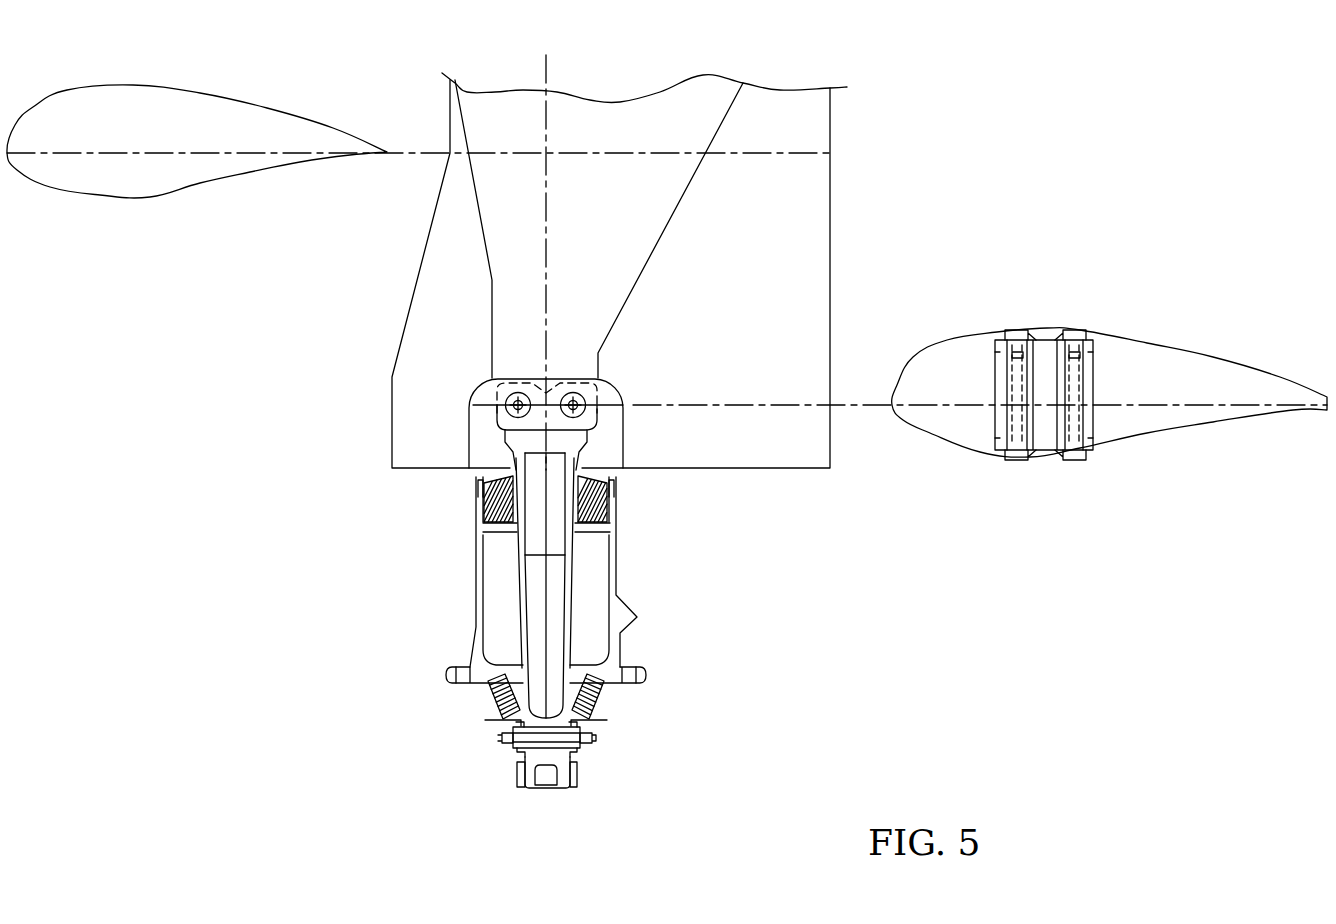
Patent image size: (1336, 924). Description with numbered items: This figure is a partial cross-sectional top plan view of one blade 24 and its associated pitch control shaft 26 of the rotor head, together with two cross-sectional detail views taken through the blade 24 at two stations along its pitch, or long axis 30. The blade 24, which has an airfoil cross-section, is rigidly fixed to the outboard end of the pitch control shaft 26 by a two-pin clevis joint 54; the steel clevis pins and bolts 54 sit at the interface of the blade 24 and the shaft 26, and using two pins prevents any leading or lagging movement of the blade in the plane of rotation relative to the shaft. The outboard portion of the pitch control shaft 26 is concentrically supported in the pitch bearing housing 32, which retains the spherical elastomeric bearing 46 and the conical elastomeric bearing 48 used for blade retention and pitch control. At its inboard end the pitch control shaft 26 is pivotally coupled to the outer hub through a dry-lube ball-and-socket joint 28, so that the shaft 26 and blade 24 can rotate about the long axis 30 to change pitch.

The blade 24 is at (187, 192).
The pitch control shaft 26 is at (568, 565).
The dry-lube ball-and-socket joint 28 is at (557, 780).
The long axis 30 is at (547, 68).
The pitch bearing housing 32 is at (480, 607).
The spherical elastomeric bearing 46 is at (597, 702).
The conical elastomeric bearing 48 is at (605, 513).
The two-pin clevis joint 54 is at (523, 394).